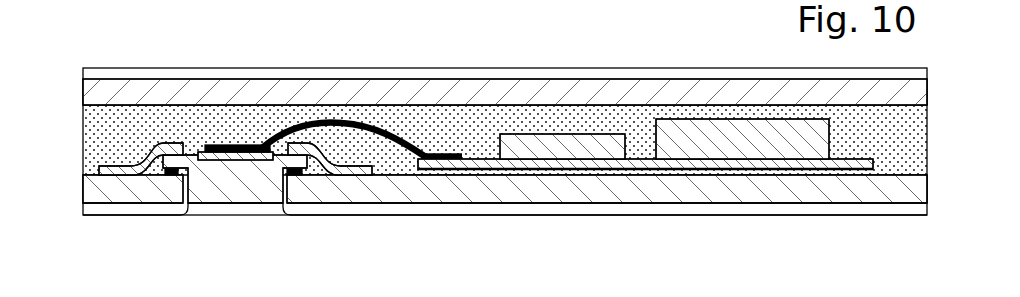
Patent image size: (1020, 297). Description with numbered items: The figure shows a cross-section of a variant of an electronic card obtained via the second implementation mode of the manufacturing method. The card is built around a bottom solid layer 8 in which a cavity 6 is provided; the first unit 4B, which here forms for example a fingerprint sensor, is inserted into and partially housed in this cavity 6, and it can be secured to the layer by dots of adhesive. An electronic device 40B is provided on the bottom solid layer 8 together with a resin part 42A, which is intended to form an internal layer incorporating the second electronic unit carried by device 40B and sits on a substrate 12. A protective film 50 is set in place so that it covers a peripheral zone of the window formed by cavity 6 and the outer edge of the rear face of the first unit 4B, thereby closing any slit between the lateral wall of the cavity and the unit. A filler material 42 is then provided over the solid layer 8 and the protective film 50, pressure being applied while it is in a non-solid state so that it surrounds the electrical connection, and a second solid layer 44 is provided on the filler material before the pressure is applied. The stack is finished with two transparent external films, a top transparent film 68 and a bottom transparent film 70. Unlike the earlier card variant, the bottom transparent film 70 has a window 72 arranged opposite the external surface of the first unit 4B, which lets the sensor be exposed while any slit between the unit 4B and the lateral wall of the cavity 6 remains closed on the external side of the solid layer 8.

The protective film 50 is at (148, 160).
The filler material 42 is at (228, 118).
The transparent external film 68 is at (355, 75).
The second solid layer 44 is at (443, 88).
The electronic device 40B is at (541, 120).
The window 72 is at (205, 220).
The first unit 4B is at (252, 195).
The cavity 6 is at (296, 203).
The bottom solid layer 8 is at (469, 192).
The resin part 42A is at (601, 183).
The substrate 12 is at (645, 162).
The bottom transparent film 70 is at (755, 210).